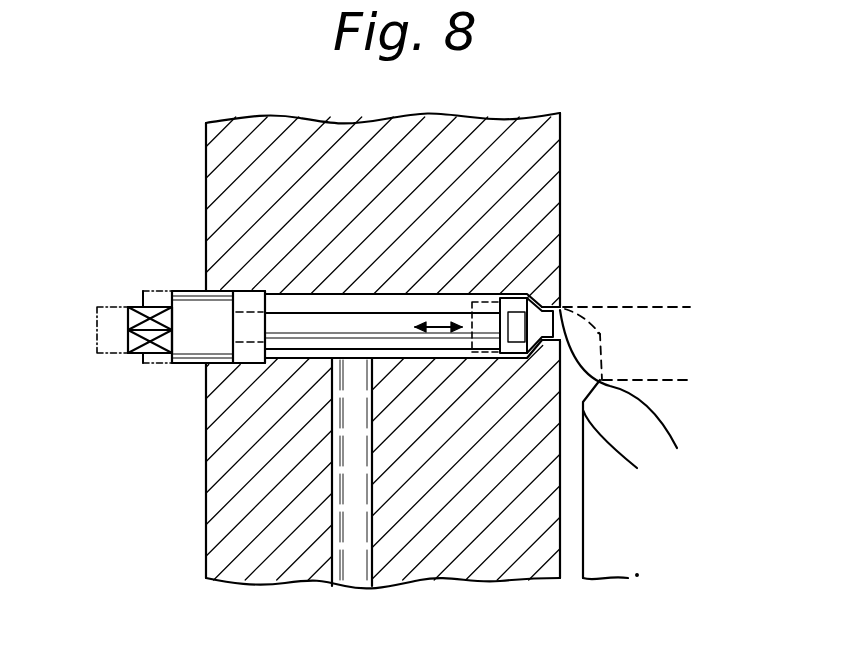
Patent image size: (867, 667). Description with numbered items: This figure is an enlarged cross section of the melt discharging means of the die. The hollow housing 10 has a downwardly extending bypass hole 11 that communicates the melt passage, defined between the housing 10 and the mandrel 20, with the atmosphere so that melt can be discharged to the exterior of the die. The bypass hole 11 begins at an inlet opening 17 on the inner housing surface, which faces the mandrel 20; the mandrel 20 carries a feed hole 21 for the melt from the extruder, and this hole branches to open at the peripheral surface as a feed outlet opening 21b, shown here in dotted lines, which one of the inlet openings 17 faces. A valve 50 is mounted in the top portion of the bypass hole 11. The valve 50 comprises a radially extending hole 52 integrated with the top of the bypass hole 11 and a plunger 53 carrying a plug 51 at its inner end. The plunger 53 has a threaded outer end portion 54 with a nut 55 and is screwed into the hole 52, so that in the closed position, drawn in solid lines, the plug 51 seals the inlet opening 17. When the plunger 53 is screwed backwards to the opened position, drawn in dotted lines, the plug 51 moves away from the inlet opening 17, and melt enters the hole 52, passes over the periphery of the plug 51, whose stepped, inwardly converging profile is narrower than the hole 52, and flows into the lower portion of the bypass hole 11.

The housing 10 is at (215, 158).
The bypass hole 11 is at (352, 578).
The inlet opening 17 is at (562, 308).
The mandrel 20 is at (745, 416).
The feed hole 21 is at (670, 320).
The feed outlet opening 21b is at (598, 333).
The valve 50 is at (137, 298).
The plug 51 is at (505, 300).
The radially extending hole 52 is at (372, 302).
The plunger 53 is at (382, 334).
The threaded outer end portion 54 is at (203, 343).
The nut 55 is at (120, 354).